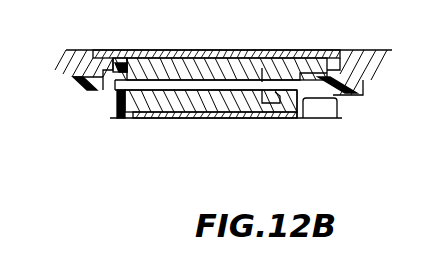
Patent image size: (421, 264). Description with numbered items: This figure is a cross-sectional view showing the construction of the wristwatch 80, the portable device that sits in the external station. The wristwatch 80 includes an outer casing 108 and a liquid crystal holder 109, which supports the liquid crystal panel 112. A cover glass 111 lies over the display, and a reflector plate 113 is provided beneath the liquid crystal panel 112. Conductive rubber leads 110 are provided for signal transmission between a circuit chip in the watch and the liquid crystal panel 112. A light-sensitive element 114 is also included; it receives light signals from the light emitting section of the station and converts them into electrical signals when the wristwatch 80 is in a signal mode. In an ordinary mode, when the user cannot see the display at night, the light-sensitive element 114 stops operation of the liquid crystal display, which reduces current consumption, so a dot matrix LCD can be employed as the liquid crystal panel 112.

The outer casing 108 is at (72, 56).
The liquid crystal holder 109 is at (118, 70).
The conductive rubber leads 110 is at (116, 108).
The cover glass 111 is at (262, 50).
The liquid crystal panel 112 is at (282, 68).
The reflector plate 113 is at (167, 118).
The light-sensitive element 114 is at (323, 110).
The wristwatch 80 is at (247, 148).